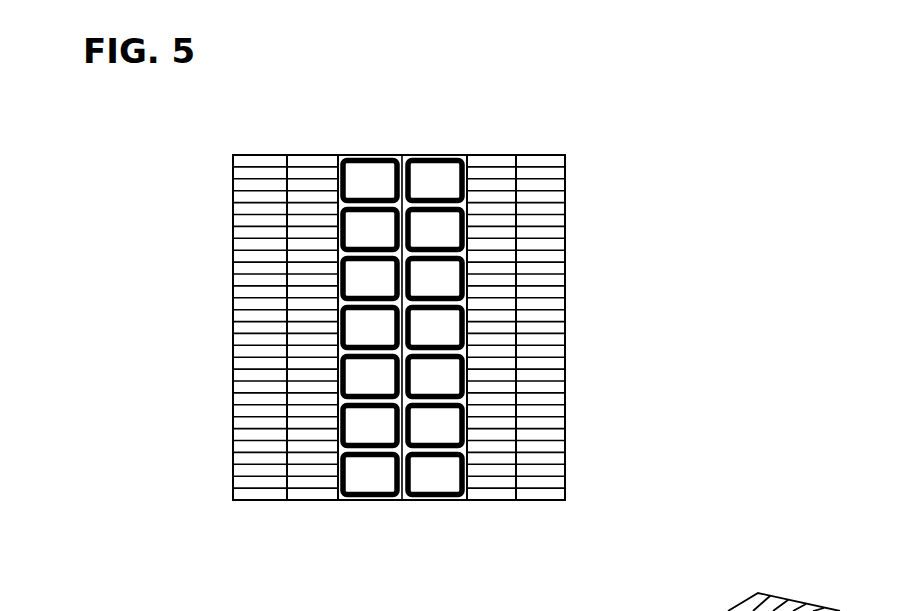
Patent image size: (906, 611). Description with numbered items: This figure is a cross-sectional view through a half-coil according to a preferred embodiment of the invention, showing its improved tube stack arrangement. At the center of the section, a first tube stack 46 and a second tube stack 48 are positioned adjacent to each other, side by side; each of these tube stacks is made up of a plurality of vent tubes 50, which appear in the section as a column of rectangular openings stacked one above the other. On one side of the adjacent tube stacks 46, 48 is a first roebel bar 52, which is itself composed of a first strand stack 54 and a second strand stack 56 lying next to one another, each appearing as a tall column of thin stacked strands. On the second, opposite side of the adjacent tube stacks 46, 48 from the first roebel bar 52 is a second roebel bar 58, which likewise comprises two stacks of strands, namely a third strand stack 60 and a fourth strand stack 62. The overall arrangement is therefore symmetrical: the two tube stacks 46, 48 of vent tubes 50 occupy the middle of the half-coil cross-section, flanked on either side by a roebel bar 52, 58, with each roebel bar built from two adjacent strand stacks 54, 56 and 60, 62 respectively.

The first tube stack 46 is at (357, 332).
The second tube stack 48 is at (436, 160).
The vent tube 50 is at (375, 500).
The first roebel bar 52 is at (213, 170).
The first strand stack 54 is at (248, 500).
The second strand stack 56 is at (302, 500).
The second roebel bar 58 is at (539, 295).
The third strand stack 60 is at (493, 500).
The fourth strand stack 62 is at (545, 495).